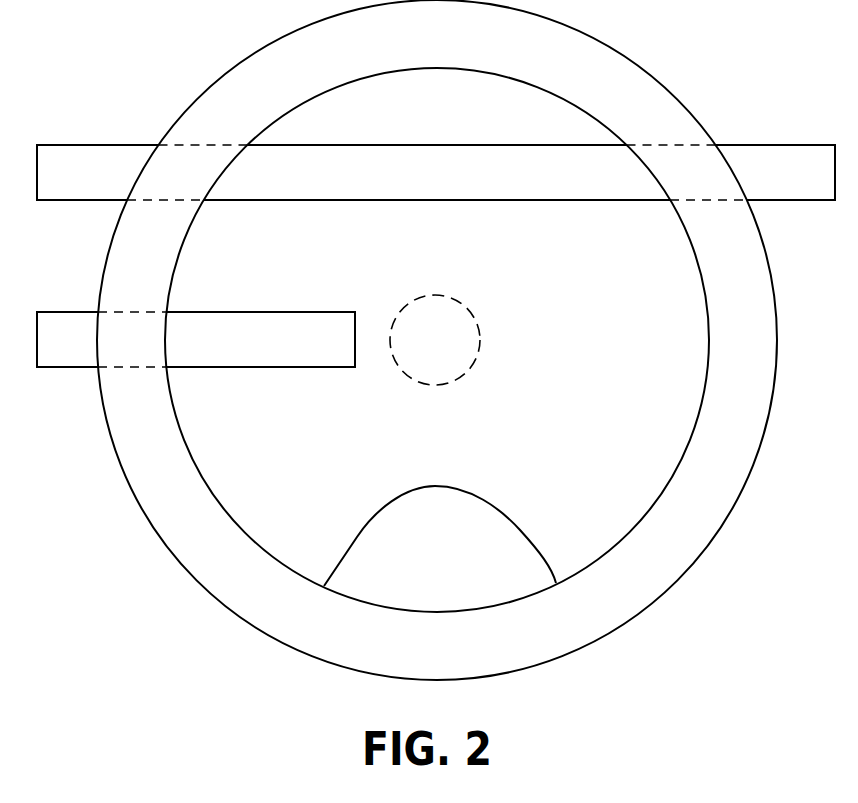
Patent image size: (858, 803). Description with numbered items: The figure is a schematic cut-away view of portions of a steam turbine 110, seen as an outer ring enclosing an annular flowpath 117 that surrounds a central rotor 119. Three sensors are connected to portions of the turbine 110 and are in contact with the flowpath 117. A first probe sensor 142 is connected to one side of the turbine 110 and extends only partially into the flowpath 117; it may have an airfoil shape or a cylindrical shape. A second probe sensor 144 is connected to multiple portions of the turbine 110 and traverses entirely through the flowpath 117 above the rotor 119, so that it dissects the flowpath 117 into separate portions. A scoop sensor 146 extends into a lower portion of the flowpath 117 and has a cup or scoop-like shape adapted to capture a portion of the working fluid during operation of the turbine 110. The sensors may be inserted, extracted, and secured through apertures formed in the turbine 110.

The turbine 110 is at (309, 85).
The flowpath 117 is at (387, 262).
The rotor 119 is at (459, 353).
The first probe sensor 142 is at (92, 358).
The second probe sensor 144 is at (111, 190).
The scoop sensor 146 is at (466, 558).